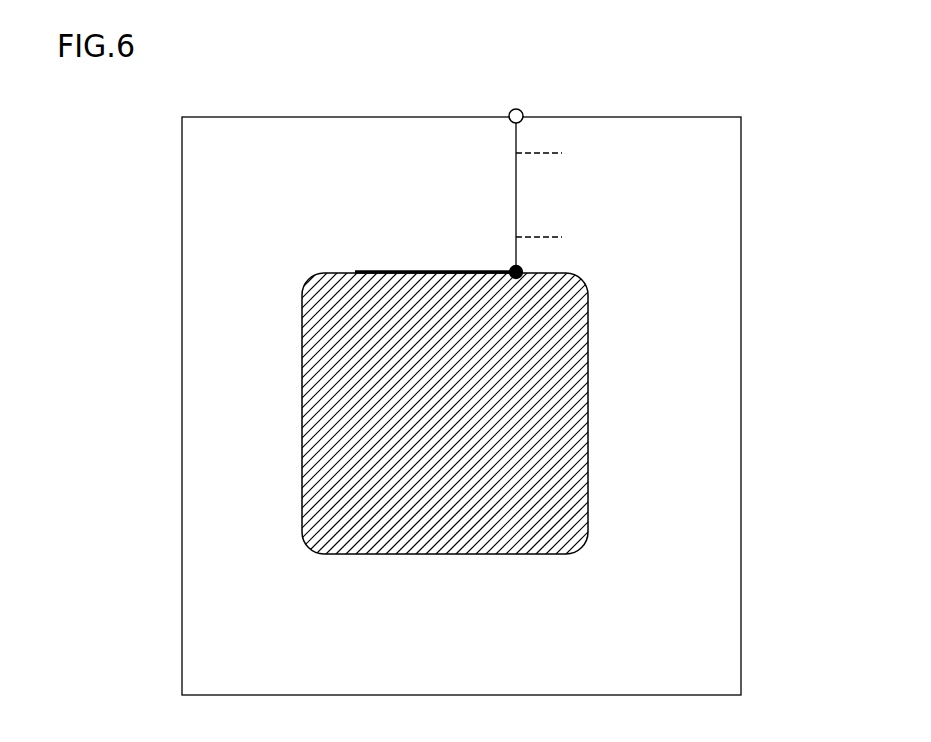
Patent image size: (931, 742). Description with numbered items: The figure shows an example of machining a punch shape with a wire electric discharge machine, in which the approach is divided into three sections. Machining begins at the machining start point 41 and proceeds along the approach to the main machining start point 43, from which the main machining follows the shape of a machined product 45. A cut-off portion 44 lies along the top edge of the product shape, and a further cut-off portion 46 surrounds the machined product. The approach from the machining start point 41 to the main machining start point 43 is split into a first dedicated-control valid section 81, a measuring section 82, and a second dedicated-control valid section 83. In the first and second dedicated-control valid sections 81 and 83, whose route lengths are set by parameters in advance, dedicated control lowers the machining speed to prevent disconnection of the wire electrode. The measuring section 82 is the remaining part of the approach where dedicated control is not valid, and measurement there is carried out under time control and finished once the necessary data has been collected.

The machining start point 41 is at (510, 112).
The main machining start point 43 is at (510, 270).
The cut-off portion 44 is at (398, 272).
The shape of a machined product 45 is at (588, 467).
The cut-off portion 46 is at (741, 550).
The first dedicated-control valid section 81 is at (516, 148).
The measuring section 82 is at (516, 220).
The second dedicated-control valid section 83 is at (516, 263).